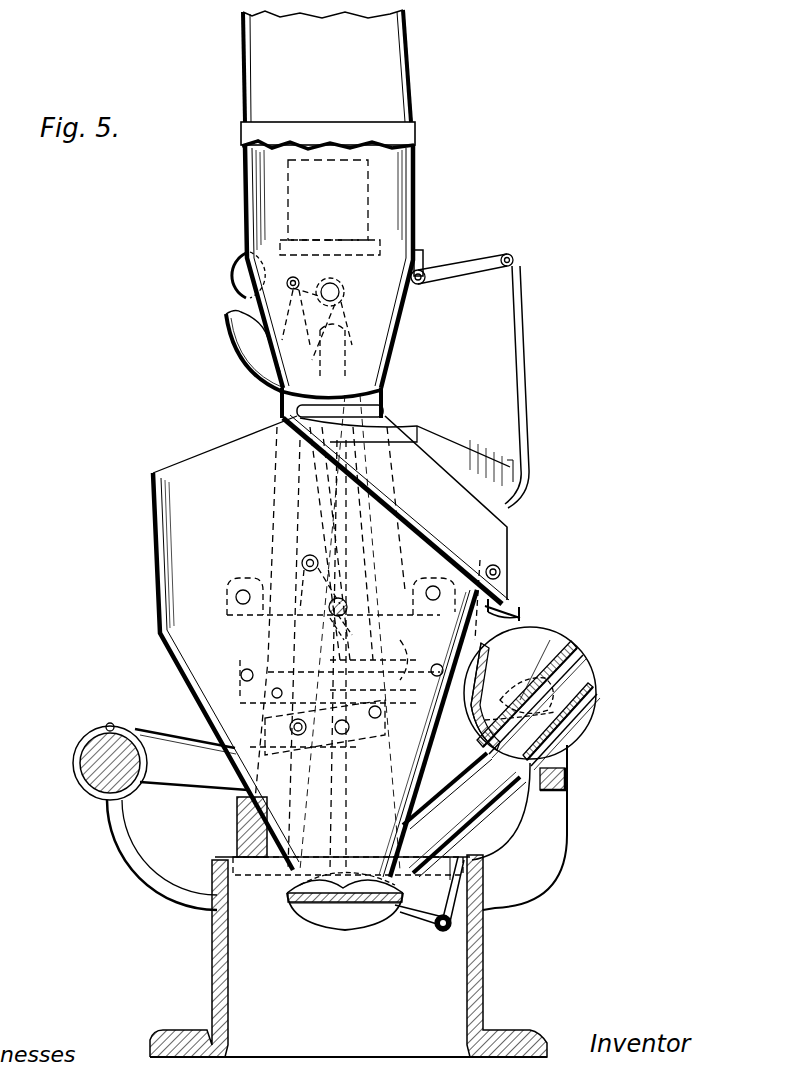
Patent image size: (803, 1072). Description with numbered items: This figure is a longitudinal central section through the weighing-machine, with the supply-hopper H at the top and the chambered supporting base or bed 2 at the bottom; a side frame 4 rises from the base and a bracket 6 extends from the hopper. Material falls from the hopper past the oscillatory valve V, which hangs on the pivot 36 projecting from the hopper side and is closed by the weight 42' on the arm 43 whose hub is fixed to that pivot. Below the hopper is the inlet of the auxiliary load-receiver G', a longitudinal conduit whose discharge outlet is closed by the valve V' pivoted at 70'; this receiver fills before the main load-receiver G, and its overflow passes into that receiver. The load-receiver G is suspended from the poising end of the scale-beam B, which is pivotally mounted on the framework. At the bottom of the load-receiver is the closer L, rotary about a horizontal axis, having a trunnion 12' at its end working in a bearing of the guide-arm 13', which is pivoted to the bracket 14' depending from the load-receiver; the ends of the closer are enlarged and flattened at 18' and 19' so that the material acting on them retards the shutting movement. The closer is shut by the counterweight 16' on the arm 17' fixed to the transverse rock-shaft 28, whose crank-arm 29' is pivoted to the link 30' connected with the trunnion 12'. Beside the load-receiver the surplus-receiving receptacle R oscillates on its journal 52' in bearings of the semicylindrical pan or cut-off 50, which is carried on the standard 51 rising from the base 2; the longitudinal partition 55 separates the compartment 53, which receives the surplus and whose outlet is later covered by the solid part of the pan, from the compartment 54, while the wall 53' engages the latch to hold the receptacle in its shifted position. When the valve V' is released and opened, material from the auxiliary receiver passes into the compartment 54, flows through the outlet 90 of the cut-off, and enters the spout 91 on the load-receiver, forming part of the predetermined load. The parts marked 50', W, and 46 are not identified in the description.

The supply-hopper H is at (421, 183).
The bracket 6 is at (368, 201).
The arm 43 is at (298, 282).
The pivot 36 is at (336, 289).
The weight 42' is at (226, 275).
The valve V is at (241, 351).
The side frame 4 is at (292, 415).
The slide 50' is at (406, 452).
The auxiliary load-receiver G' is at (408, 437).
The pivot 70' is at (510, 591).
The valve V' is at (512, 596).
The load-receiver G is at (315, 636).
The crank-arm 29' is at (339, 572).
The transverse rock-shaft 28 is at (345, 602).
The arm 17' is at (337, 635).
The counterweight 16' is at (375, 683).
The link 30' is at (325, 741).
The wheel W is at (98, 786).
The pin 46 is at (128, 713).
The scale-beam B is at (191, 759).
The surplus-receiving receptacle R is at (530, 684).
The compartment 54 is at (552, 640).
The longitudinal partition 55 is at (567, 652).
The compartment 53 is at (555, 706).
The semicylindrical pan 50 is at (577, 721).
The wall 53' is at (578, 732).
The pivot 52' is at (520, 681).
The outlet 90 is at (502, 767).
The spout 91 is at (478, 810).
The standard 51 is at (555, 825).
The supporting base 2 is at (484, 960).
The closer L is at (345, 917).
The flattened end portion 18' is at (322, 906).
The trunnion 12' is at (347, 863).
The flattened end portion 19' is at (423, 900).
The bracket 14' is at (478, 889).
The guide-arm 13' is at (423, 933).